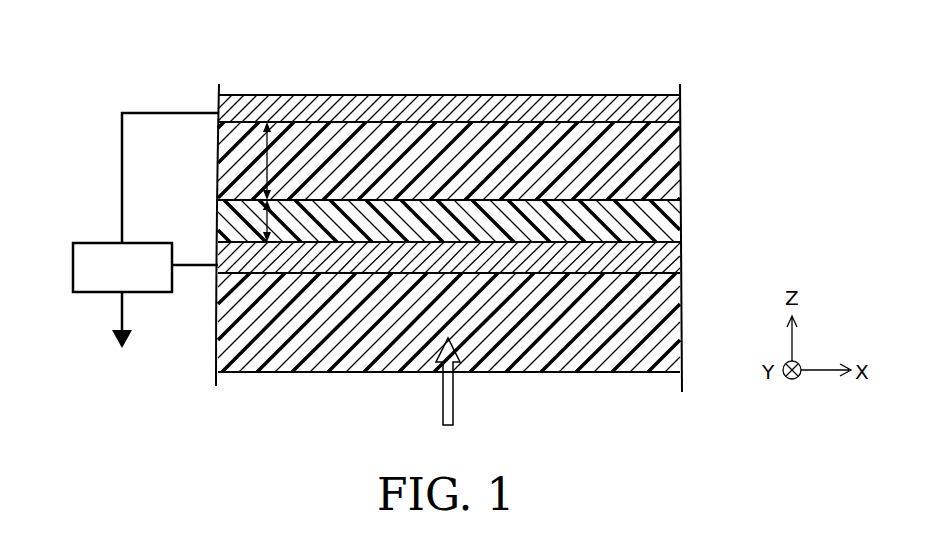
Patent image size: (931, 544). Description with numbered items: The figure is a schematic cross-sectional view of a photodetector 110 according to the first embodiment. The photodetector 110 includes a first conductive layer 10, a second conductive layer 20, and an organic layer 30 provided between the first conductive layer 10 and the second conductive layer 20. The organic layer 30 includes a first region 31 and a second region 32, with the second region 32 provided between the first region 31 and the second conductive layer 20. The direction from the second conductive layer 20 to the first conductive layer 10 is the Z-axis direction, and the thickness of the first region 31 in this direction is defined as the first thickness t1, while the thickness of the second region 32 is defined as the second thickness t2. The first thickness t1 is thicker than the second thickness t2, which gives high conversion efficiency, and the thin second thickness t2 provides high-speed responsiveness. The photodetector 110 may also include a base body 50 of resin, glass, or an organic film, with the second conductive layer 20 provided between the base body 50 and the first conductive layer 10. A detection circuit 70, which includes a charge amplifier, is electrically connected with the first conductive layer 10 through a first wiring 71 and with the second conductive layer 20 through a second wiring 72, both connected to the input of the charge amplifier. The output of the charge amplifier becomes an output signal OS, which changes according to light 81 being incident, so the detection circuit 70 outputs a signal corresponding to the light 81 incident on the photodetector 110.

The photodetector 110 is at (770, 105).
The first conductive layer 10 is at (660, 110).
The organic layer 30 is at (753, 145).
The first region 31 is at (655, 165).
The second region 32 is at (655, 222).
The second conductive layer 20 is at (660, 258).
The base body 50 is at (660, 320).
The light 81 is at (453, 395).
The detection circuit 70 is at (90, 243).
The first wiring 71 is at (122, 143).
The second wiring 72 is at (197, 268).
The first thickness t1 is at (262, 162).
The second thickness t2 is at (262, 228).
The output signal OS is at (122, 316).